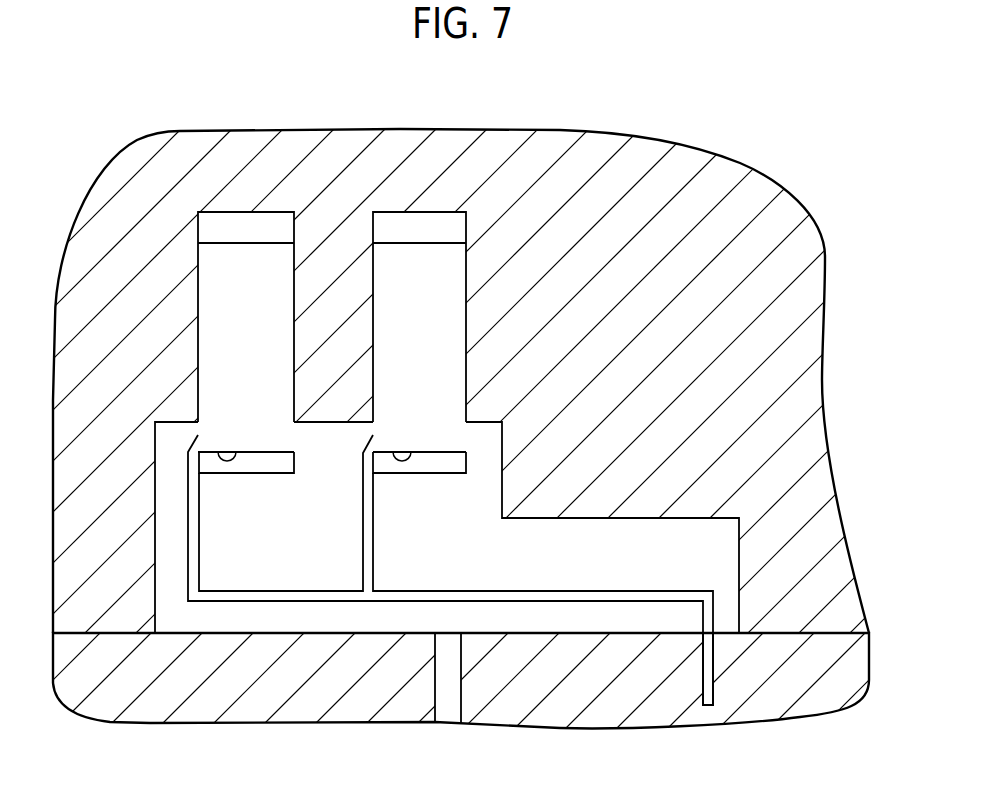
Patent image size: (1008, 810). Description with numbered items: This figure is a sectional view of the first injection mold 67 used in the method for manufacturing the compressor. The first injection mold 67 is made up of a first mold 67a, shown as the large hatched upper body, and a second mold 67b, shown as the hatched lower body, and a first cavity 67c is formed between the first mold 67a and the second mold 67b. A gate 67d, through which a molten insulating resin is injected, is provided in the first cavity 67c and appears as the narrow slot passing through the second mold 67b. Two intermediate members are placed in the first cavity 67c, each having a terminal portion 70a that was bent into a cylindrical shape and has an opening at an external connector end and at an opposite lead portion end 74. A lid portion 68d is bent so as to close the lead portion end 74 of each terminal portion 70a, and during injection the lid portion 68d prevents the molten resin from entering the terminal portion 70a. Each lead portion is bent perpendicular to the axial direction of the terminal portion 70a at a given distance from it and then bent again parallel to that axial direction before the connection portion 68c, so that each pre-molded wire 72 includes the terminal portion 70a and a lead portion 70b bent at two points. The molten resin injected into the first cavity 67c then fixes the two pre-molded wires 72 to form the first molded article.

The first injection mold 67 is at (504, 424).
The first mold 67a is at (663, 155).
The second mold 67b is at (790, 716).
The first cavity 67c is at (650, 518).
The gate 67d is at (435, 674).
The terminal portion 70a is at (262, 340).
The lead portion 70b is at (300, 597).
The pre-molded wire 72 is at (258, 234).
The lead portion end 74 is at (232, 455).
The lid portion 68d is at (245, 460).
The connection portion 68c is at (708, 661).